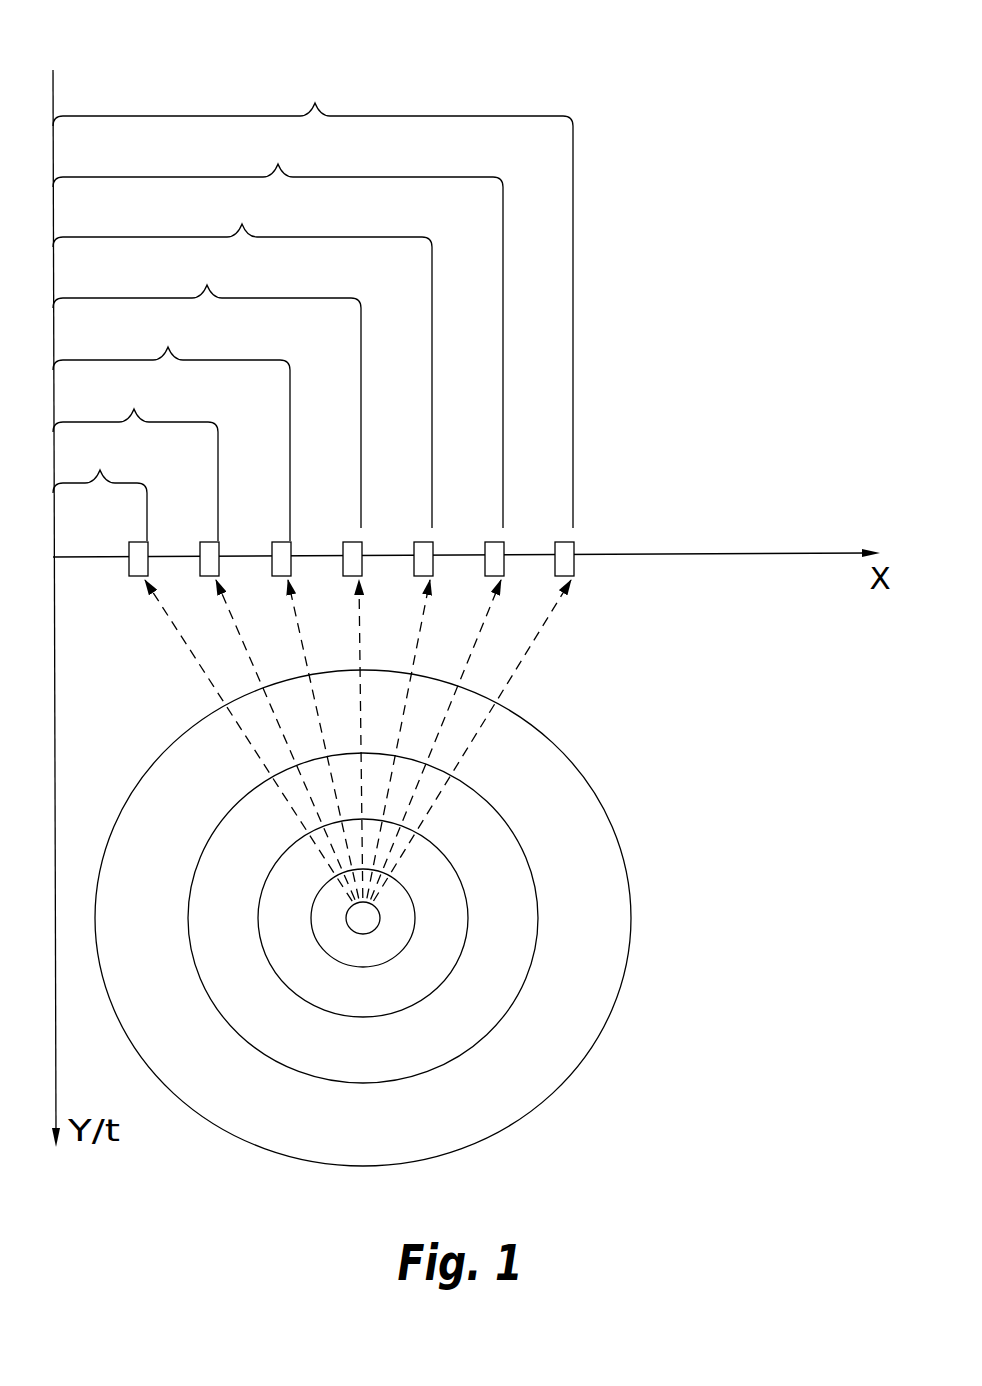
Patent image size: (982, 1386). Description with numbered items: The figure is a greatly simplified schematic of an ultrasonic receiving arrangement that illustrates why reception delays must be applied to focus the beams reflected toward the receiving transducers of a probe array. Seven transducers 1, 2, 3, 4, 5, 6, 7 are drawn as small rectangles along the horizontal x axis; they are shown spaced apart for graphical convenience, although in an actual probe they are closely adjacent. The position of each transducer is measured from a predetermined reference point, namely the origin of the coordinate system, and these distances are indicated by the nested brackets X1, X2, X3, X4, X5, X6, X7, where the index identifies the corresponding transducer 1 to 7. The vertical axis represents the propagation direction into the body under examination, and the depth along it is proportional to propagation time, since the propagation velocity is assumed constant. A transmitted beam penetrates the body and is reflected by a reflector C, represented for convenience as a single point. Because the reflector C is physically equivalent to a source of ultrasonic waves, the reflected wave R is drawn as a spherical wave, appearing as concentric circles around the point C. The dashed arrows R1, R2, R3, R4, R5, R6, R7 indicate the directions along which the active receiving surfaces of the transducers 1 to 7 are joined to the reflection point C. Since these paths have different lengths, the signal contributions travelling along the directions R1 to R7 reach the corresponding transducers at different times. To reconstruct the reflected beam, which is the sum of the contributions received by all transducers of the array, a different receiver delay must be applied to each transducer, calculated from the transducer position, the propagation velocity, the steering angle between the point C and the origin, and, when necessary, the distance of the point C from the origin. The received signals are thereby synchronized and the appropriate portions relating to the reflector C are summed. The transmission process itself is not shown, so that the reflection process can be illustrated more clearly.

The transducer 1 is at (129, 550).
The transducer 2 is at (202, 548).
The transducer 3 is at (273, 545).
The transducer 4 is at (345, 543).
The transducer 5 is at (415, 542).
The transducer 6 is at (488, 540).
The transducer 7 is at (560, 540).
The direction of reflected signal R1 is at (177, 623).
The direction of reflected signal R2 is at (233, 615).
The direction of reflected signal R3 is at (295, 605).
The direction of reflected signal R4 is at (361, 617).
The direction of reflected signal R5 is at (423, 620).
The direction of reflected signal R6 is at (488, 618).
The direction of reflected signal R7 is at (546, 623).
The reflected wave R is at (603, 808).
The reflector C is at (365, 936).
The distance of transducer 1 from reference point X1 is at (100, 487).
The distance of transducer 2 from reference point X2 is at (135, 457).
The distance of transducer 3 from reference point X3 is at (171, 426).
The distance of transducer 4 from reference point X4 is at (207, 389).
The distance of transducer 5 from reference point X5 is at (242, 358).
The distance of transducer 6 from reference point X6 is at (278, 328).
The distance of transducer 7 from reference point X7 is at (313, 298).